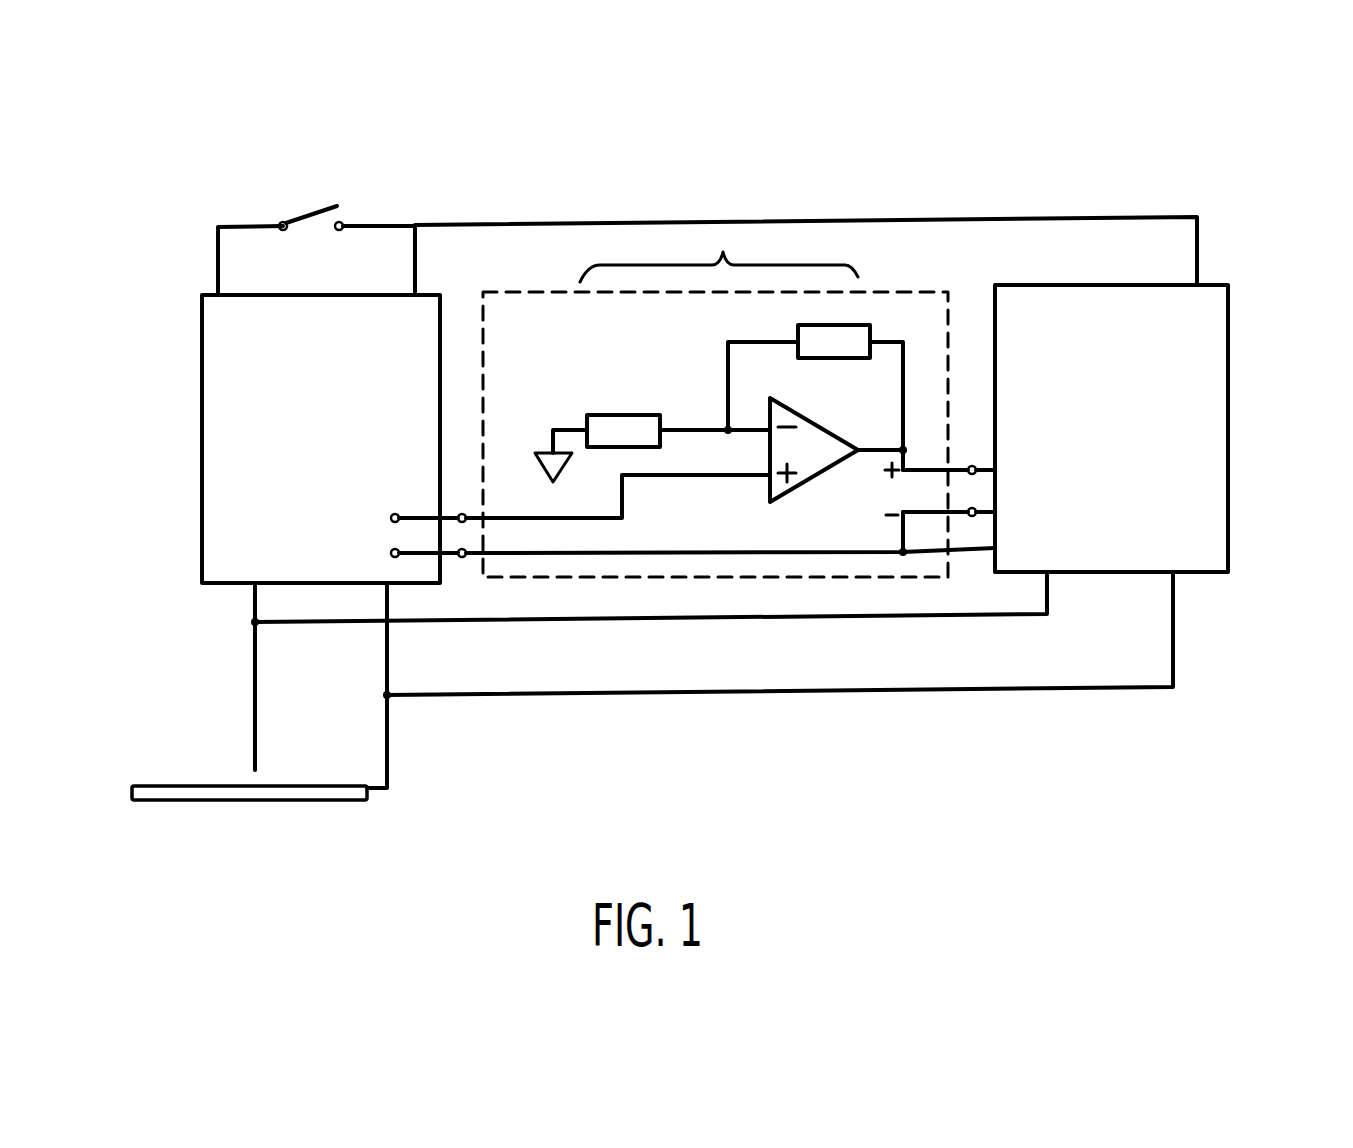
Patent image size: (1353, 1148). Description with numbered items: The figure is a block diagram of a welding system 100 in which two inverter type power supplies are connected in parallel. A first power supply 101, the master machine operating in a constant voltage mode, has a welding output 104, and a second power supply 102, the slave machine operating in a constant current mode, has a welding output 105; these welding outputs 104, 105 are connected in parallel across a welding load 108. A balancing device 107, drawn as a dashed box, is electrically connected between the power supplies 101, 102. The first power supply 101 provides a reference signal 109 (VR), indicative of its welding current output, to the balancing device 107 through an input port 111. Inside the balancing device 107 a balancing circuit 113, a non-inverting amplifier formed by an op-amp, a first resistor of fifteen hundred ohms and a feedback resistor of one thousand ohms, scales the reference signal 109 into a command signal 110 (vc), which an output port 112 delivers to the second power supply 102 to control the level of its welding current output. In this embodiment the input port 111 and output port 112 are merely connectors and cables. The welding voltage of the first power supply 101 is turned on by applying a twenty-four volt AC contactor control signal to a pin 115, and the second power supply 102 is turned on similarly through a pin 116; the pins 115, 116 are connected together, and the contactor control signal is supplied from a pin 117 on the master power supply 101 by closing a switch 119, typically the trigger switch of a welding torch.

The welding system 100 is at (1102, 727).
The first power supply 101 is at (202, 466).
The second power supply 102 is at (1228, 463).
The welding output 104 is at (313, 592).
The welding output 105 is at (1106, 594).
The balancing device 107 is at (878, 288).
The welding load 108 is at (192, 786).
The reference signal 109 is at (358, 543).
The external command signal 110 is at (866, 495).
The input port 111 is at (474, 536).
The output port 112 is at (975, 494).
The balancing circuit 113 is at (723, 250).
The pin 115 is at (416, 265).
The pin 116 is at (1200, 247).
The pin 117 is at (218, 265).
The switch 119 is at (312, 182).